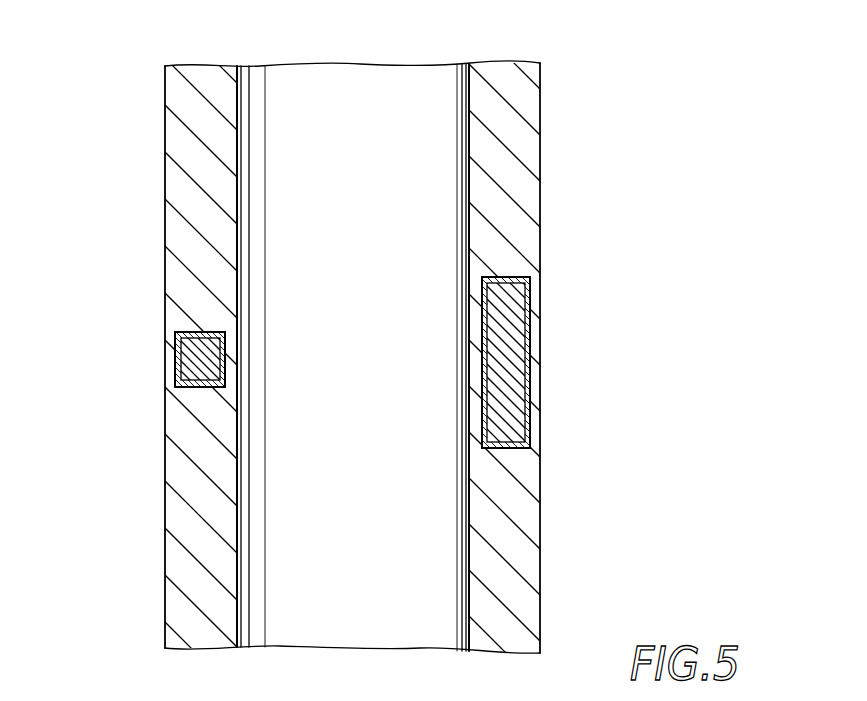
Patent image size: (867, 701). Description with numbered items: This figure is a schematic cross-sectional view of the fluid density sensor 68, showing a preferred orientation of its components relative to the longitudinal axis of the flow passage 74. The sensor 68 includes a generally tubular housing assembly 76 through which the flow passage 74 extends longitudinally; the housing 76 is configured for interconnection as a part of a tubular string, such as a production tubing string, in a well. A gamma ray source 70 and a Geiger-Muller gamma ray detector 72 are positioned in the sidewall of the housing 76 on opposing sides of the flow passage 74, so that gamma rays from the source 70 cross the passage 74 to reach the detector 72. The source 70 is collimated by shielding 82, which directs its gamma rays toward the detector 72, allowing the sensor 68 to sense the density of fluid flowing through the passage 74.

The sensor 68 is at (130, 166).
The gamma ray source 70 is at (228, 358).
The Geiger-Muller gamma ray detector 72 is at (484, 355).
The flow passage 74 is at (360, 458).
The tubular housing assembly 76 is at (542, 128).
The shielding 82 is at (184, 333).